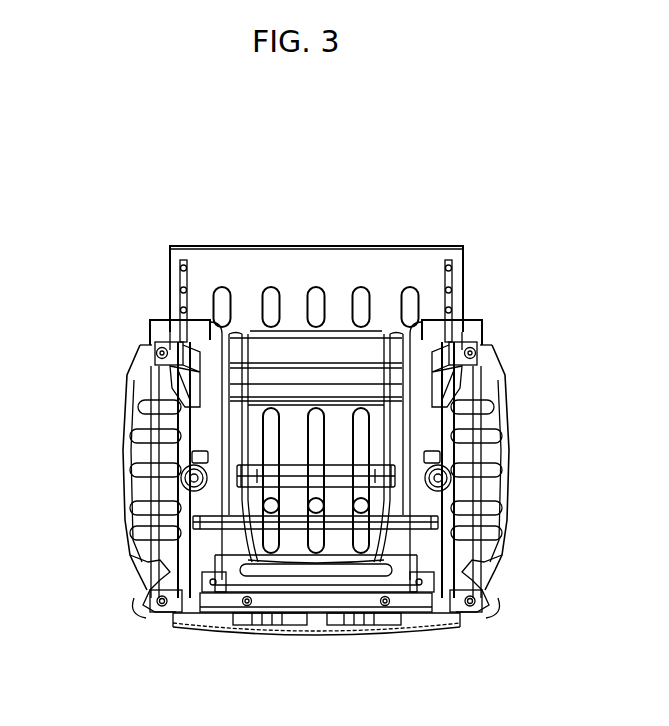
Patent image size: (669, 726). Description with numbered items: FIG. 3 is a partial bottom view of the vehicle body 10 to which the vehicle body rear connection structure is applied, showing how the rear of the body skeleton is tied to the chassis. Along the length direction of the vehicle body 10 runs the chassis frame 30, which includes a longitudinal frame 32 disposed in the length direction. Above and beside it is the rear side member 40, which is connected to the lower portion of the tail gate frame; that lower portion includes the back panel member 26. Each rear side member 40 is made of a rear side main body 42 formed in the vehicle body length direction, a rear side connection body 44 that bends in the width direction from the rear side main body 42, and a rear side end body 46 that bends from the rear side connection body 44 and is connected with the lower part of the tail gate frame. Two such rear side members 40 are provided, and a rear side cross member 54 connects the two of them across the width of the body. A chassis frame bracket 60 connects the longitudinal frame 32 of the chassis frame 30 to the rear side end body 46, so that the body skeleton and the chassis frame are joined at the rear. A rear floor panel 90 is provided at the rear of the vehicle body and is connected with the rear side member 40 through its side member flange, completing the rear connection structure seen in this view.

The vehicle body 10 is at (304, 439).
The back panel member 26 is at (318, 612).
The chassis frame 30 is at (428, 635).
The longitudinal frame 32 is at (445, 567).
The rear side member 40 is at (227, 463).
The rear side main body 42 is at (236, 420).
The rear side connection body 44 is at (232, 502).
The rear side end body 46 is at (215, 562).
The rear side cross member 54 is at (338, 477).
The chassis frame bracket 60 is at (221, 593).
The rear floor panel 90 is at (340, 412).